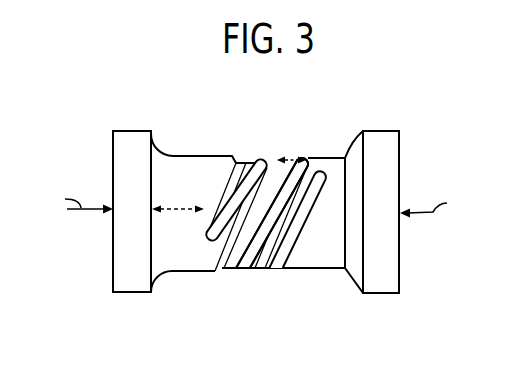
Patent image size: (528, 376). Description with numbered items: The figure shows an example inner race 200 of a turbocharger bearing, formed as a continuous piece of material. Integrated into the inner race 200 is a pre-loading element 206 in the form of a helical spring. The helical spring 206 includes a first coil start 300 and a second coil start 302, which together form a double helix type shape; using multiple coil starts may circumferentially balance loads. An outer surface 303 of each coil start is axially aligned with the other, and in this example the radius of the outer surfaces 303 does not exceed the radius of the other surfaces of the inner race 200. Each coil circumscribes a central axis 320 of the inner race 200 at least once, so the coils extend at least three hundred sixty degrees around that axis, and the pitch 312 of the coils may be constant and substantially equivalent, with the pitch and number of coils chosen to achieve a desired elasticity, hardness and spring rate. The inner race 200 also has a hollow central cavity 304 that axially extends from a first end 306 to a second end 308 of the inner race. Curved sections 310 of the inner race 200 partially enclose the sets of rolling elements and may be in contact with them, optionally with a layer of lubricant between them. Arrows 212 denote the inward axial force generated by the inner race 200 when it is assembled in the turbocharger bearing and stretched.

The inner race 200 is at (330, 86).
The pre-loading element 206 is at (335, 134).
The arrows 212 is at (257, 203).
The first coil start 300 is at (217, 246).
The second coil start 302 is at (231, 181).
The outer surface 303 is at (268, 158).
The hollow central cavity 304 is at (278, 267).
The first end 306 is at (84, 180).
The second end 308 is at (413, 192).
The curved sections 310 is at (156, 147).
The pitch 312 is at (288, 158).
The central axis 320 is at (178, 204).